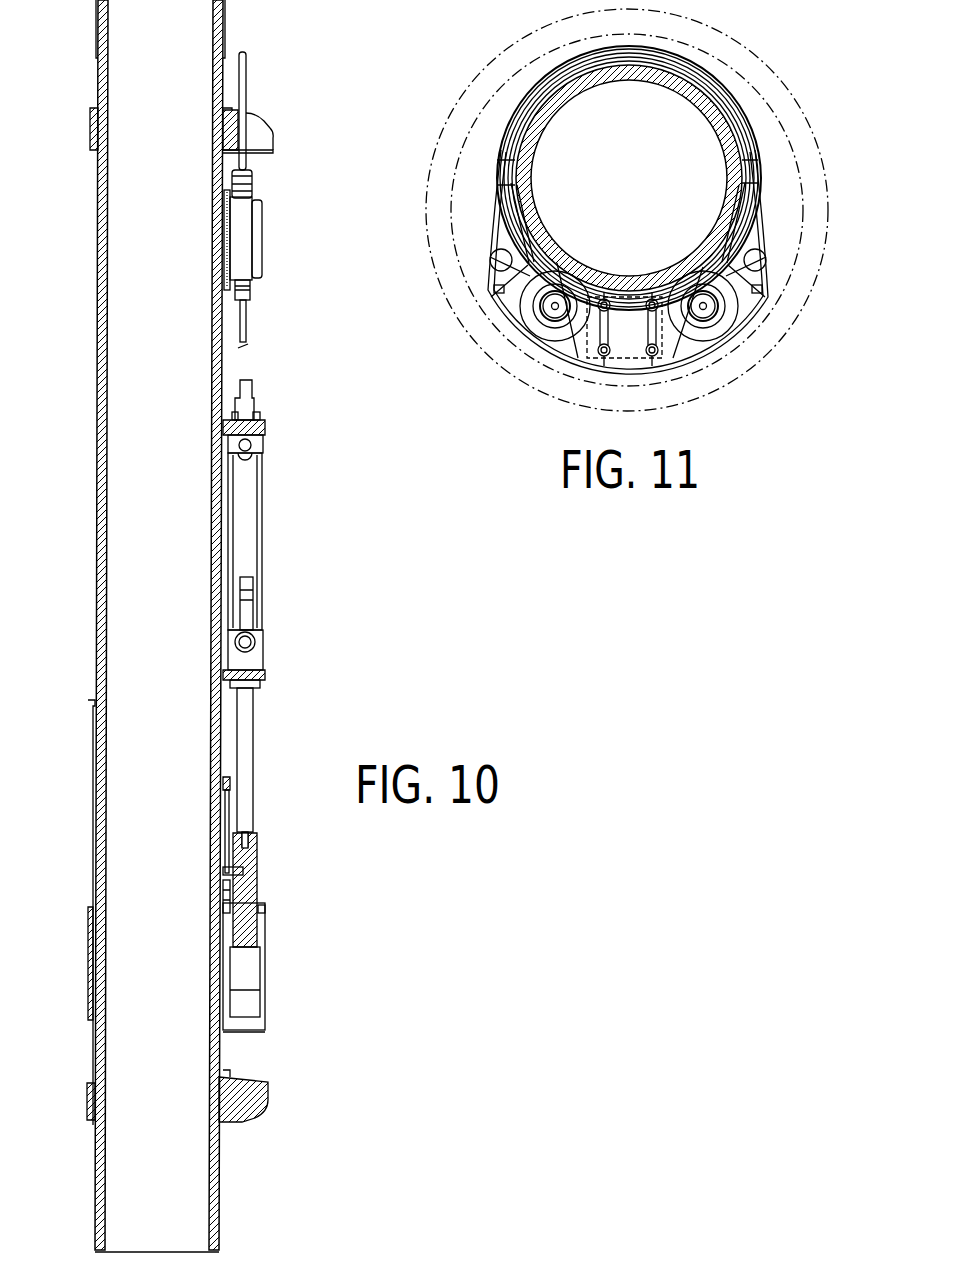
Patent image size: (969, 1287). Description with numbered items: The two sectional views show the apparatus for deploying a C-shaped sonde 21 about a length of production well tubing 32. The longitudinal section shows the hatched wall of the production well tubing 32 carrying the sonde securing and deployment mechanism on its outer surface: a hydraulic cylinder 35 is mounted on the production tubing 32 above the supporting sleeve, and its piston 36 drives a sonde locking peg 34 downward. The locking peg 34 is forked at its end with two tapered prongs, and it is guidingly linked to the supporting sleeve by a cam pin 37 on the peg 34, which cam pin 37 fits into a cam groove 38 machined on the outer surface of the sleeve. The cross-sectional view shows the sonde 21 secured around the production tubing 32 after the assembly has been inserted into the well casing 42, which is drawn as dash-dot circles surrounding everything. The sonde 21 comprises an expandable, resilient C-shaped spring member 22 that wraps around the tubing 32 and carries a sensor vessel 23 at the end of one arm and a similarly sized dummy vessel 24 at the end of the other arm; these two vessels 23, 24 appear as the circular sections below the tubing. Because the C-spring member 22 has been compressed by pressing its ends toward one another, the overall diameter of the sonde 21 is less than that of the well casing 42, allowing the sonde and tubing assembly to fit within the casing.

In FIG. 10, the sonde 21 is at (268, 952).
In FIG. 11, the sonde 21 is at (487, 292).
In FIG. 10, the C-shaped spring member 22 is at (97, 276).
In FIG. 11, the C-shaped spring member 22 is at (493, 188).
In FIG. 11, the sensor vessel 23 is at (717, 315).
In FIG. 11, the dummy vessel 24 is at (537, 318).
In FIG. 11, the production well tubing 32 is at (700, 103).
In FIG. 10, the sonde locking peg 34 is at (240, 890).
In FIG. 10, the hydraulic cylinder 35 is at (248, 507).
In FIG. 10, the piston 36 is at (248, 716).
In FIG. 10, the cam pin 37 is at (240, 872).
In FIG. 10, the cam groove 38 is at (228, 800).
In FIG. 11, the well casing 42 is at (815, 152).